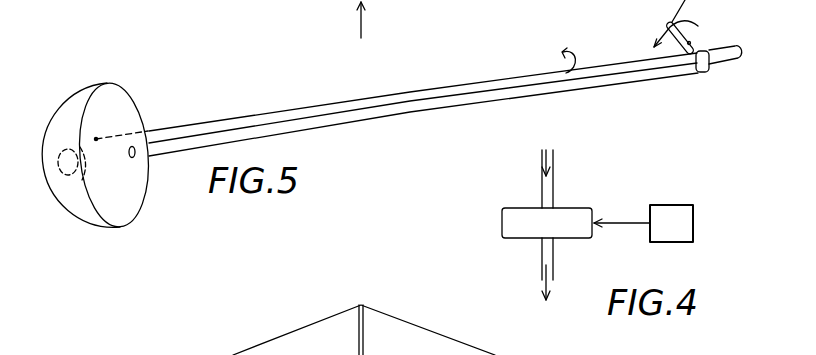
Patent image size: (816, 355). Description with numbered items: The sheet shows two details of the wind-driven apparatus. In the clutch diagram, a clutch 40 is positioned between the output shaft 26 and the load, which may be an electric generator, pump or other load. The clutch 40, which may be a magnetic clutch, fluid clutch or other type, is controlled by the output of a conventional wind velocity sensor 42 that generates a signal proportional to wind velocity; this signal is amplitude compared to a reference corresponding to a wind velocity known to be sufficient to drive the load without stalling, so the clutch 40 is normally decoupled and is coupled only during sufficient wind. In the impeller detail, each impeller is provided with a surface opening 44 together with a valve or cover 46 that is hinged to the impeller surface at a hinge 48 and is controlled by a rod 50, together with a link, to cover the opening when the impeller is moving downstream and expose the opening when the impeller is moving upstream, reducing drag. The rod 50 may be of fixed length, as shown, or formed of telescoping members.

In FIG. 4, the output shaft 26 is at (545, 187).
In FIG. 4, the clutch 40 is at (520, 230).
In FIG. 4, the wind velocity sensor 42 is at (670, 222).
In FIG. 5, the surface opening 44 is at (68, 182).
In FIG. 5, the valve or cover 46 is at (83, 181).
In FIG. 5, the hinge 48 is at (66, 143).
In FIG. 5, the rod 50 is at (218, 120).